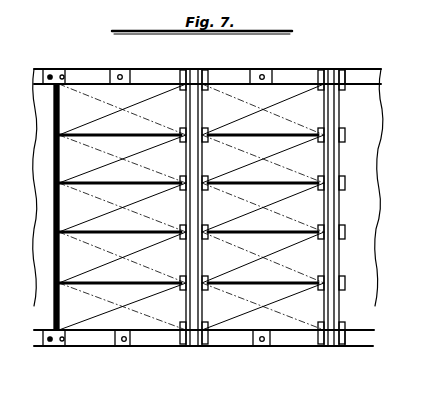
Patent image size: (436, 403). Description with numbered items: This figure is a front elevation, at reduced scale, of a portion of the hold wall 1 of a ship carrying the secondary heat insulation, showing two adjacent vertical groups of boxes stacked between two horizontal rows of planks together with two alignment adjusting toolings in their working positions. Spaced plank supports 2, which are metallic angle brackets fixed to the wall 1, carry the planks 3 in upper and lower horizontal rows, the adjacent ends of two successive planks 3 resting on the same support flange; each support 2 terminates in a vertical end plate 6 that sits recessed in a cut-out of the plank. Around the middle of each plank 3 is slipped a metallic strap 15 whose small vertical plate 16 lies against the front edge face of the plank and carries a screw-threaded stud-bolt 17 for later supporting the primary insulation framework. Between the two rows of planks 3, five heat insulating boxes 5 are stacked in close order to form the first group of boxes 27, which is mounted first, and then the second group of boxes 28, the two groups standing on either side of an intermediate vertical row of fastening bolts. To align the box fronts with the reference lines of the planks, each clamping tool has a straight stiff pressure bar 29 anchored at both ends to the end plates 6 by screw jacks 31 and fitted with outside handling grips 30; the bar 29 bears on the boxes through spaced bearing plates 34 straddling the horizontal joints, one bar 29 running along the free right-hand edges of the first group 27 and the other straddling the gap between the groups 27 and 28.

The metallic wall 1 is at (380, 136).
The plank support 2 is at (50, 73).
The plank 3 is at (162, 85).
The heat insulating box 5 is at (64, 118).
The end plate 6 is at (48, 338).
The strap 15 is at (109, 84).
The small vertical plate 16 is at (121, 75).
The stud-bolt 17 is at (121, 82).
The first group of boxes 27 is at (277, 119).
The second group of boxes 28 is at (78, 152).
The pressure bar 29 is at (201, 109).
The handling grip 30 is at (186, 163).
The screw jack 31 is at (191, 77).
The bearing plate 34 is at (182, 228).